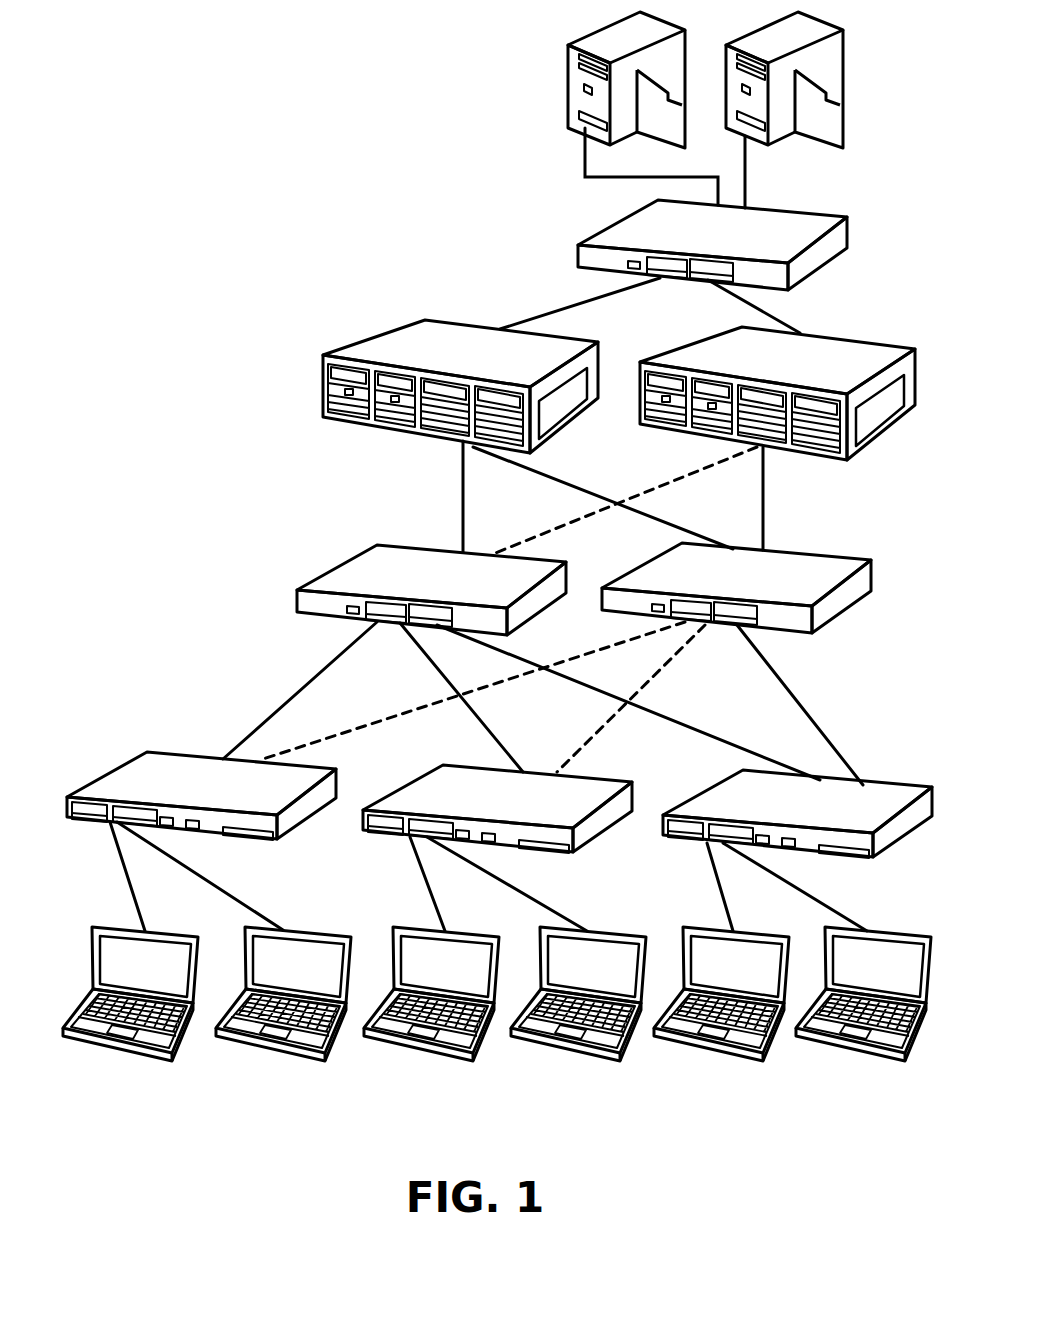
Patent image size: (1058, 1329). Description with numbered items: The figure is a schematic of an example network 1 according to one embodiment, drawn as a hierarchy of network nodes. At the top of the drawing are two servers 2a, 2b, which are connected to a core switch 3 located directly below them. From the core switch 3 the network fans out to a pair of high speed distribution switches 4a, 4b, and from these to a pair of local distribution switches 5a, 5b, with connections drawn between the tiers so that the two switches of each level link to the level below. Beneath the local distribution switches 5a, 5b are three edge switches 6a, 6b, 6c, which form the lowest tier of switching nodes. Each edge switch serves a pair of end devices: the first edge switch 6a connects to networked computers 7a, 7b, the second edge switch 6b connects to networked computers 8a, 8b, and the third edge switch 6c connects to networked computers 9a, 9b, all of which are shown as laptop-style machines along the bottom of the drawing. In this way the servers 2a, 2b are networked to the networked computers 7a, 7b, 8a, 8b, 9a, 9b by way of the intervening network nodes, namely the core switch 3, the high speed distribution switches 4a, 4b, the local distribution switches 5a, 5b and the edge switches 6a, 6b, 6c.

The network system 1 is at (378, 192).
The server 2a is at (568, 80).
The server 2b is at (845, 72).
The core switch 3 is at (833, 215).
The high speed distribution switch 4a is at (379, 336).
The high speed distribution switch 4b is at (866, 342).
The local distribution switch 5a is at (352, 560).
The local distribution switch 5b is at (848, 557).
The edge switch 6a is at (118, 771).
The edge switch 6b is at (412, 783).
The edge switch 6c is at (705, 792).
The networked computer 7a is at (130, 1018).
The networked computer 7b is at (283, 1018).
The networked computer 8a is at (431, 1018).
The networked computer 8b is at (578, 1018).
The networked computer 9a is at (721, 1018).
The networked computer 9b is at (863, 1018).